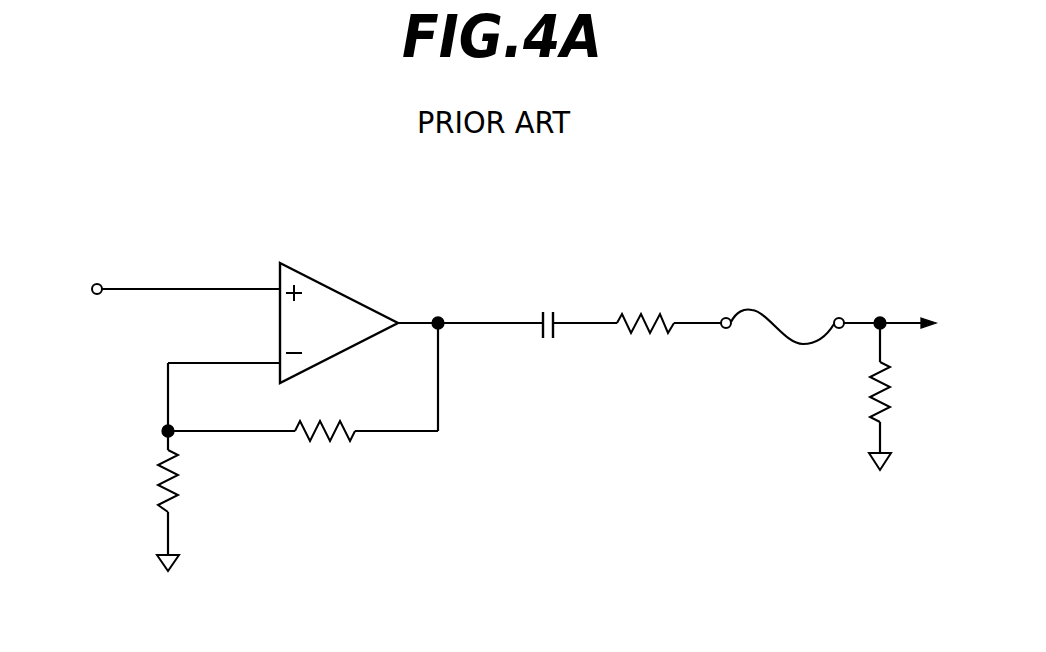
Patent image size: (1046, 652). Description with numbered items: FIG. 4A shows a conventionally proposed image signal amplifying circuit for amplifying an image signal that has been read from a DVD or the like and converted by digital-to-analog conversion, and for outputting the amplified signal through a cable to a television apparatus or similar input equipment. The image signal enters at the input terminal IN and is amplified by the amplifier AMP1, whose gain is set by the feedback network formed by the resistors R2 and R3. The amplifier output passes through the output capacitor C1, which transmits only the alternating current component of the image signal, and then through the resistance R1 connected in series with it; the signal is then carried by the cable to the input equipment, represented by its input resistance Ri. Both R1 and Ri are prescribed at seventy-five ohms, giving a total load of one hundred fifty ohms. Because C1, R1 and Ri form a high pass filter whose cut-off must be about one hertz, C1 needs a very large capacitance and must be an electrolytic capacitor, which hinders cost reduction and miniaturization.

The input terminal IN is at (92, 284).
The operational amplifier AMP1 is at (344, 290).
The output capacitor C1 is at (575, 345).
The resistance R1 is at (669, 346).
The feedback resistor R2 is at (303, 449).
The ground resistor R3 is at (188, 501).
The input resistance Ri is at (899, 396).